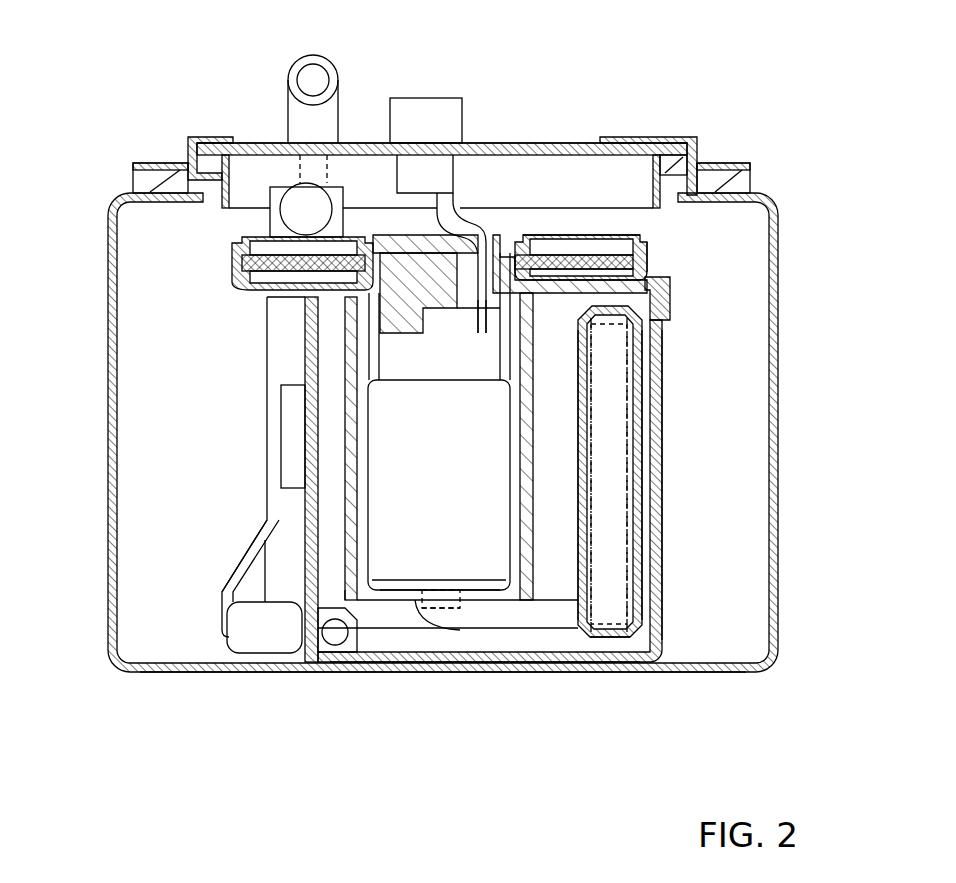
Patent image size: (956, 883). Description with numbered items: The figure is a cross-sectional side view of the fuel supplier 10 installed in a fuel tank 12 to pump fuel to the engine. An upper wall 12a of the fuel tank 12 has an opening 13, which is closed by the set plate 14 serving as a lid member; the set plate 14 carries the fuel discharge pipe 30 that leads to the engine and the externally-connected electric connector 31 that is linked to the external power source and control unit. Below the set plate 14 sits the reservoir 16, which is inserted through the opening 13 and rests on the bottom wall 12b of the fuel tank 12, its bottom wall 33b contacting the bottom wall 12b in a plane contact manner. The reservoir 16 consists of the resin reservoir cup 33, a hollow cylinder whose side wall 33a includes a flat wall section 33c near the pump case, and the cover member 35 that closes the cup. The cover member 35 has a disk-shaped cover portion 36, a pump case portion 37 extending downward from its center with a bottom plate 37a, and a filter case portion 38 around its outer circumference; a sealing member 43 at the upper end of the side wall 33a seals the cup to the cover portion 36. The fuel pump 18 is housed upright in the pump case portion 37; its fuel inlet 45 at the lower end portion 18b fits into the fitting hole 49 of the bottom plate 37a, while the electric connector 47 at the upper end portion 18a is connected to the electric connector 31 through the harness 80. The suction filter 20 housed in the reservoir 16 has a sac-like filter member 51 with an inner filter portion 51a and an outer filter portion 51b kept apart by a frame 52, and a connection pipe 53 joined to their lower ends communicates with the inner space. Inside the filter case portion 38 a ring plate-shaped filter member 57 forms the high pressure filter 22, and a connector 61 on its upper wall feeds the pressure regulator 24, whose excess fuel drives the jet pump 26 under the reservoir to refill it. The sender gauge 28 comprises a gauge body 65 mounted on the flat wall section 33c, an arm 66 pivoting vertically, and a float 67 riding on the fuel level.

The fuel supplier 10 is at (627, 78).
The fuel tank 12 is at (777, 260).
The upper wall 12a is at (150, 188).
The bottom wall 12b is at (177, 677).
The opening 13 is at (230, 165).
The set plate 14 is at (547, 140).
The reservoir 16 is at (670, 392).
The fuel pump 18 is at (407, 560).
The upper end portion 18a is at (393, 360).
The lower end portion 18b is at (488, 590).
The suction filter 20 is at (645, 482).
The high pressure filter 22 is at (653, 257).
The pressure regulator 24 is at (267, 222).
The jet pump 26 is at (335, 640).
The sender gauge 28 is at (243, 547).
The fuel discharge pipe 30 is at (314, 55).
The externally-connected electric connector 31 is at (427, 98).
The reservoir cup 33 is at (660, 527).
The side wall 33a is at (655, 573).
The bottom wall 33b is at (612, 665).
The flat wall section 33c is at (312, 330).
The cover member 35 is at (497, 233).
The cover portion 36 is at (398, 275).
The pump case portion 37 is at (350, 378).
The bottom plate 37a is at (368, 640).
The filter case portion 38 is at (603, 240).
The sealing member 43 is at (663, 295).
The fuel inlet 45 is at (437, 608).
The electric connector 47 is at (468, 298).
The fitting hole 49 is at (460, 595).
The filter member 51 is at (642, 360).
The filter portion 51a is at (580, 478).
The filter portion 51b is at (638, 606).
The frame 52 is at (612, 437).
The connection pipe 53 is at (558, 617).
The filter member 57 is at (577, 260).
The connector 61 is at (300, 242).
The gauge body 65 is at (293, 410).
The arm 66 is at (258, 530).
The float 67 is at (240, 625).
The harness 80 is at (458, 217).